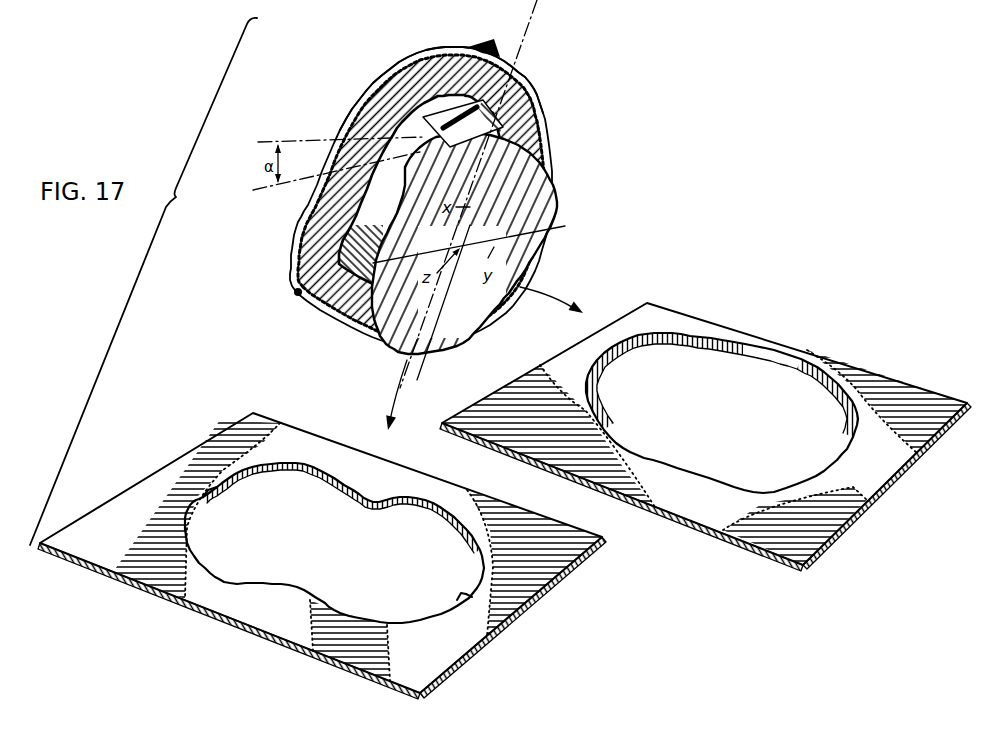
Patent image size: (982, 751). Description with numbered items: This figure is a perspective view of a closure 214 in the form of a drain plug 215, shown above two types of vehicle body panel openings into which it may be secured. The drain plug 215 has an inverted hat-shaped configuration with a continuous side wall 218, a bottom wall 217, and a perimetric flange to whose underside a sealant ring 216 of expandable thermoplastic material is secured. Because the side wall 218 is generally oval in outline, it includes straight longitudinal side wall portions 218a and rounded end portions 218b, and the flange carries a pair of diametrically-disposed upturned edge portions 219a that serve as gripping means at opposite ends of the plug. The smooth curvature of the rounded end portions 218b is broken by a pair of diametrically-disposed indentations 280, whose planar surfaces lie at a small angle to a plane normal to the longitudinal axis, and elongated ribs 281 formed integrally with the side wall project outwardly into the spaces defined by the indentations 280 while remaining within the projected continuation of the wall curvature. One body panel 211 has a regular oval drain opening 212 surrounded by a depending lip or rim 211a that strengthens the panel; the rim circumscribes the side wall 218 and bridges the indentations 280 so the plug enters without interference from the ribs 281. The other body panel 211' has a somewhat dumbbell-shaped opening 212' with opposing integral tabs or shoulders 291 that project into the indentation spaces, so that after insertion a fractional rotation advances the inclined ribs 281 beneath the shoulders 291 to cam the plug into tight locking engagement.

The vehicle body panel 211 is at (705, 450).
The body panel 211' is at (322, 556).
The depending lip or rim 211a is at (777, 377).
The drain opening 212 is at (722, 393).
The opening 212' is at (334, 542).
The closure 214 is at (547, 99).
The drain plug 215 is at (420, 63).
The sealant ring 216 is at (530, 130).
The bottom wall 217 is at (530, 250).
The side wall 218 is at (363, 203).
The straight longitudinal side wall portions 218a is at (377, 231).
The rounded end portions 218b is at (402, 90).
The upturned edge portions 219a is at (493, 53).
The indentations 280 is at (489, 134).
The ribs or protuberances 281 is at (453, 133).
The tabs or shoulders 291 is at (217, 484).